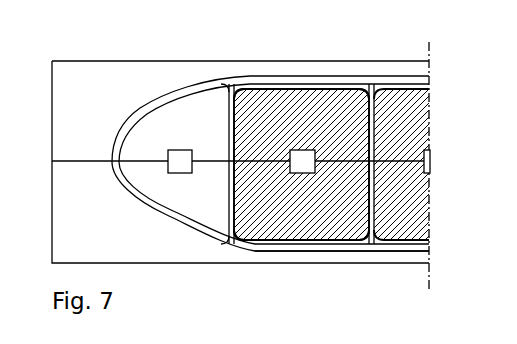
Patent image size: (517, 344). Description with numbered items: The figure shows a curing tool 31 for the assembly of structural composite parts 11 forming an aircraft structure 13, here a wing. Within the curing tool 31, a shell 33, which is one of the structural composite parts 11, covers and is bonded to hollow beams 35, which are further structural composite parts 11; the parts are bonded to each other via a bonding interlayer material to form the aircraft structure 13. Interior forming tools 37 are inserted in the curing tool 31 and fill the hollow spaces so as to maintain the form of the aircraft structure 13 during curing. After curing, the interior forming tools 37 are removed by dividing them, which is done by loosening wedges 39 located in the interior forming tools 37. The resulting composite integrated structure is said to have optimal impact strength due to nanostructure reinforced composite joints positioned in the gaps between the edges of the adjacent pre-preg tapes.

The structural composite parts 11 is at (204, 95).
The aircraft structure 13 is at (452, 84).
The curing tool 31 is at (222, 284).
The shell 33 is at (161, 231).
The hollow beams 35 is at (231, 193).
The interior forming tools 37 is at (336, 233).
The wedges 39 is at (184, 173).